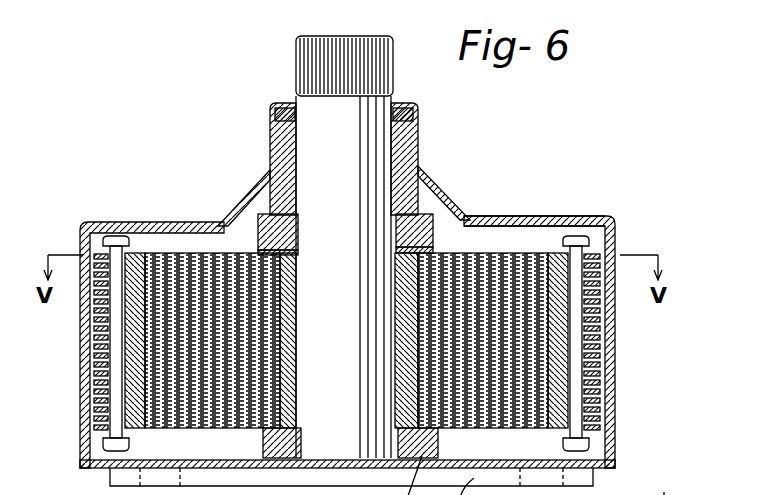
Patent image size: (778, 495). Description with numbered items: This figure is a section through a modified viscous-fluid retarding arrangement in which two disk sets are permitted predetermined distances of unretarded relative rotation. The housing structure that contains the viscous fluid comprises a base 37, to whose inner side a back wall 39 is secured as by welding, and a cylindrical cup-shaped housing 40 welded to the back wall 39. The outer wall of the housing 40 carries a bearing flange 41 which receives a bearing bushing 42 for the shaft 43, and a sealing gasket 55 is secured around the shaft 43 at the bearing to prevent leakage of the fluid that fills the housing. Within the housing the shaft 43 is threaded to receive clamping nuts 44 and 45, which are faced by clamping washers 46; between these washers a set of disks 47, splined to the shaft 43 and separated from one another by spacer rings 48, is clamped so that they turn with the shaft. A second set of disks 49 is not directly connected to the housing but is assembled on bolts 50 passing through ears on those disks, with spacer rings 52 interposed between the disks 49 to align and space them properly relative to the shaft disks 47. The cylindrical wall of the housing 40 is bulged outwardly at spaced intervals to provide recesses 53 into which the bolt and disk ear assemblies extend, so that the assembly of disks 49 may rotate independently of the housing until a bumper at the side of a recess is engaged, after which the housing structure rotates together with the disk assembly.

The base 37 is at (471, 486).
The back wall 39 is at (596, 458).
The cylindrical cup-shaped housing 40 is at (578, 211).
The bearing flange 41 is at (433, 187).
The bearing bushing 42 is at (409, 135).
The shaft 43 is at (347, 29).
The clamping nut 44 is at (427, 217).
The clamping nut 45 is at (419, 475).
The clamping washers 46 is at (437, 426).
The disks 47 is at (440, 242).
The spacer rings 48 is at (458, 216).
The disks 49 is at (513, 238).
The bolts 50 is at (582, 340).
The spacer rings 52 is at (597, 293).
The recesses 53 is at (590, 436).
The sealing gasket 55 is at (405, 105).